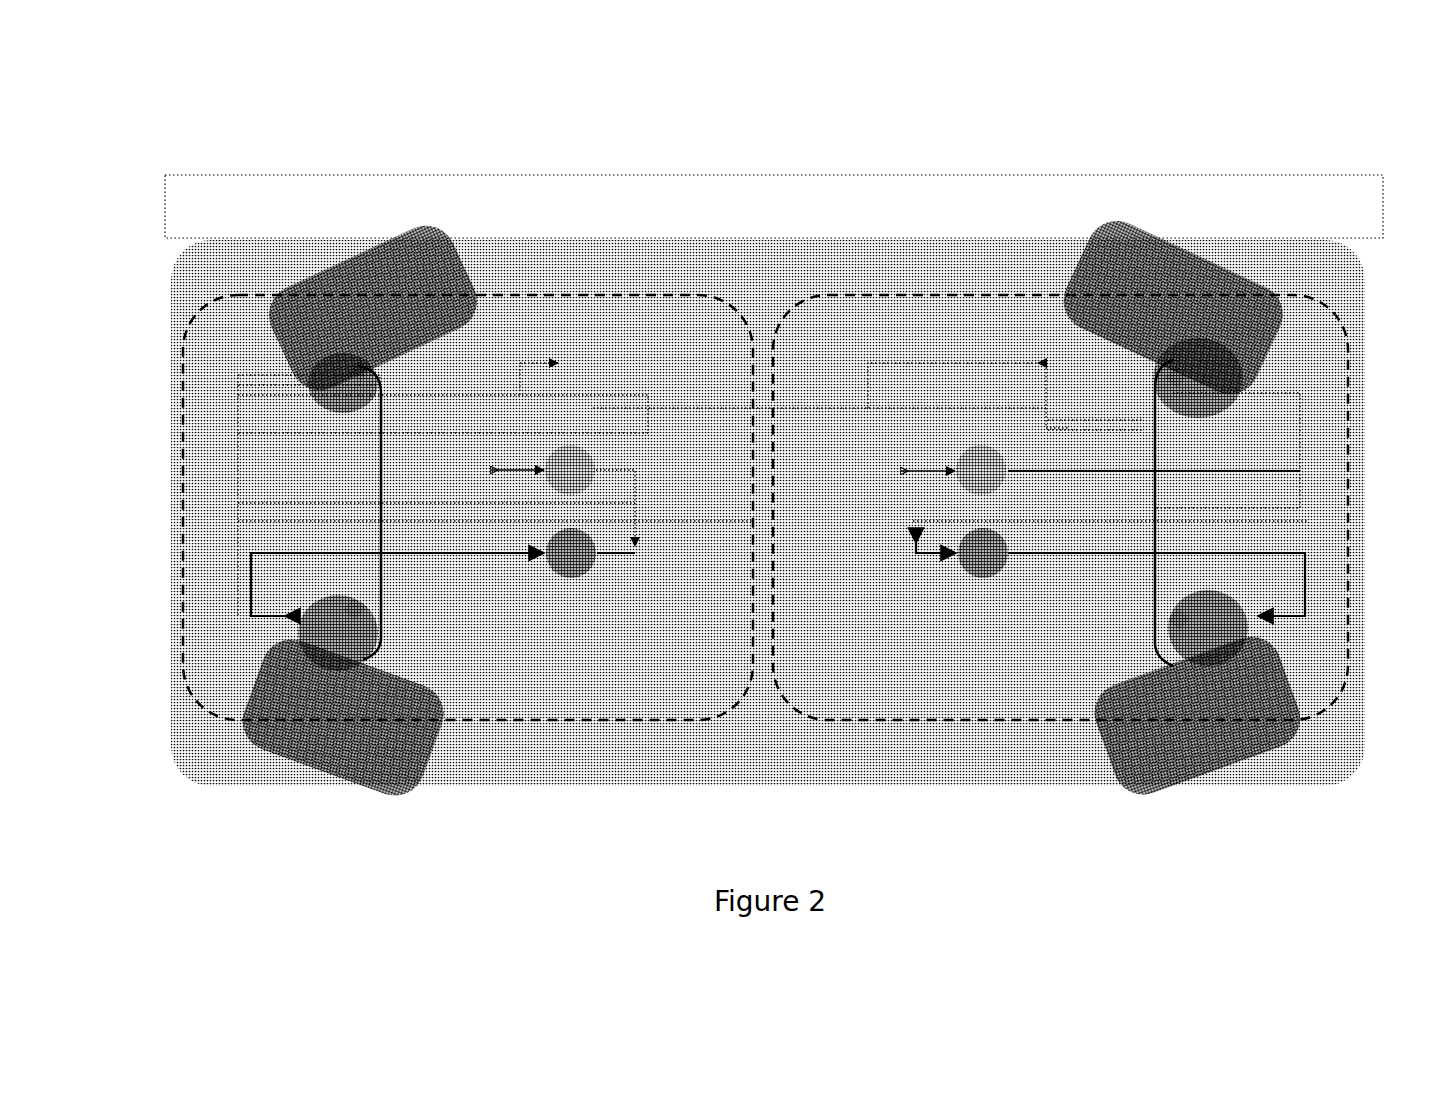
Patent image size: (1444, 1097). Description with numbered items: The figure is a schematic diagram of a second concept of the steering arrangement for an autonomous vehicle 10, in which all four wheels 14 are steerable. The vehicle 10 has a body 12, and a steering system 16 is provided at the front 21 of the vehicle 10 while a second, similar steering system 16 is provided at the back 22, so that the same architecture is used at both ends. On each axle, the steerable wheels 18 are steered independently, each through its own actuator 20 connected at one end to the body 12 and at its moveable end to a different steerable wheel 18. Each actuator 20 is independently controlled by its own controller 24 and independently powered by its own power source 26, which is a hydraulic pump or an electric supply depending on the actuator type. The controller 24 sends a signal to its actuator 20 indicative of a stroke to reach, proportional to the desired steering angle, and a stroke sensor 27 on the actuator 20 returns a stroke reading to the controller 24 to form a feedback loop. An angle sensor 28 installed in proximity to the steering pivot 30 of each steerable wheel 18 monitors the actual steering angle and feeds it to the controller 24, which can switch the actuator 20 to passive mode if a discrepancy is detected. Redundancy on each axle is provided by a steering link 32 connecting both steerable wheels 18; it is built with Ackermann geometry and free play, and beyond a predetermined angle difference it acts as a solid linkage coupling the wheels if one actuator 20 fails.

The autonomous vehicle 10 is at (686, 118).
The body 12 is at (774, 150).
The wheels 14 is at (806, 510).
The steering system 16 is at (766, 601).
The steerable wheels 18 is at (806, 510).
The actuator 20 is at (150, 705).
The front 21 is at (158, 527).
The back 22 is at (1370, 447).
The controller 24 is at (690, 486).
The power source 26 is at (560, 458).
The stroke sensor 27 is at (1330, 348).
The angle sensor 28 is at (1200, 365).
The steering pivot 30 is at (208, 852).
The steering link 32 is at (1143, 437).